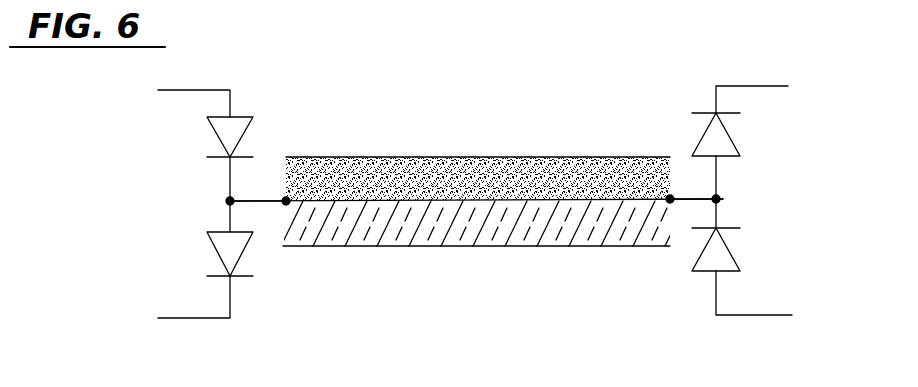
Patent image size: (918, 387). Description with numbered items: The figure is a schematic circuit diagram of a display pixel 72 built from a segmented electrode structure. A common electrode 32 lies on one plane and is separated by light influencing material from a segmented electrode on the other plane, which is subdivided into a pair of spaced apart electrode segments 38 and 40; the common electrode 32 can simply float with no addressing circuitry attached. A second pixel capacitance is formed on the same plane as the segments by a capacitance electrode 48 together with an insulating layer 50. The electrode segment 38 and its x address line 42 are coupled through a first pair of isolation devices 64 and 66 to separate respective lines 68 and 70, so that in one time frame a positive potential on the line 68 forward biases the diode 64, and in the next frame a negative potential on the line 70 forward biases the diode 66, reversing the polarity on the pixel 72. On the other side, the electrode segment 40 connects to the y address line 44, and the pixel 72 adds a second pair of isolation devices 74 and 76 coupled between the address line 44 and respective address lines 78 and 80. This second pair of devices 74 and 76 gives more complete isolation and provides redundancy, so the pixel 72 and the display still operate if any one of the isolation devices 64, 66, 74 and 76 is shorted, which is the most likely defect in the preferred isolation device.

The common electrode 32 is at (430, 156).
The electrode segment 38 is at (360, 205).
The electrode segment 40 is at (627, 202).
The address line 42 is at (265, 200).
The address line 44 is at (693, 199).
The capacitance electrode 48 is at (465, 247).
The insulating layer 50 is at (508, 237).
The isolation device 64 is at (222, 132).
The isolation device 66 is at (217, 248).
The line 68 is at (187, 90).
The line 70 is at (198, 318).
The pixel embodiment 72 is at (786, 183).
The isolation device 74 is at (720, 252).
The isolation device 76 is at (727, 138).
The address line 78 is at (770, 315).
The address line 80 is at (752, 86).